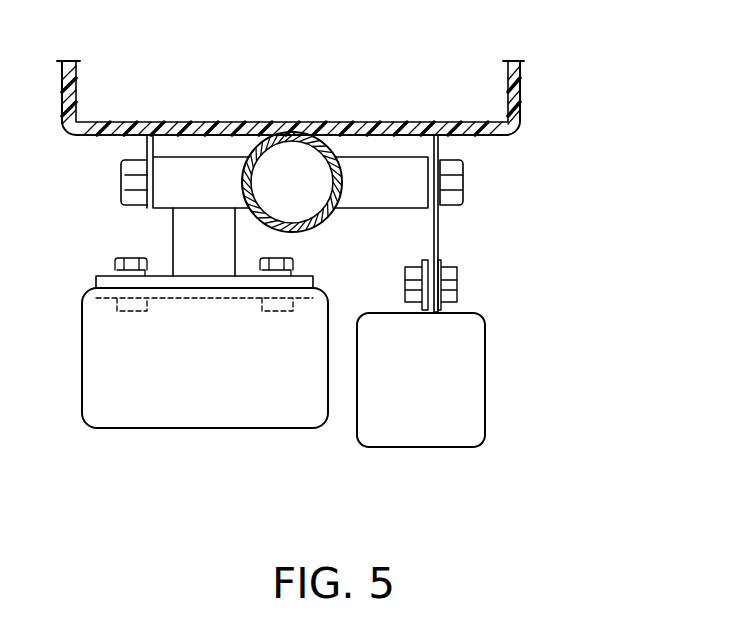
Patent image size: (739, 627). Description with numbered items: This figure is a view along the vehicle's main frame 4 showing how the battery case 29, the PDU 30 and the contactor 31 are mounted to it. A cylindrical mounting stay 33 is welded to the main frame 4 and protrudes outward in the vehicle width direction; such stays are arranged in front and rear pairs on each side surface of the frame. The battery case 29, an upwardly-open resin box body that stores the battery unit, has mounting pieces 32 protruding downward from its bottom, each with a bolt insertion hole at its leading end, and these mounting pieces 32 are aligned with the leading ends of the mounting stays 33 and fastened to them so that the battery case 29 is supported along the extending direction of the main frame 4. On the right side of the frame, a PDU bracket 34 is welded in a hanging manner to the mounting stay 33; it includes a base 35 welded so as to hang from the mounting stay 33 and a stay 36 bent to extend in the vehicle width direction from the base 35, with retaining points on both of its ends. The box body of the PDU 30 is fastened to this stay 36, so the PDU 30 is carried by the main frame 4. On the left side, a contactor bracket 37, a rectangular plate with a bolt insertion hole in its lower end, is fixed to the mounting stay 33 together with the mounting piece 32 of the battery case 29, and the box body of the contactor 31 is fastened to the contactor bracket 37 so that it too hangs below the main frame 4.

The main frame 4 is at (330, 148).
The battery case 29 is at (520, 90).
The PDU (Power Drive Unit) 30 is at (273, 415).
The contactor 31 is at (432, 437).
The mounting piece 32 is at (147, 148).
The mounting stay 33 is at (215, 175).
The PDU bracket 34 is at (204, 396).
The base 35 is at (212, 253).
The stay 36 is at (184, 282).
The contactor bracket 37 is at (437, 243).